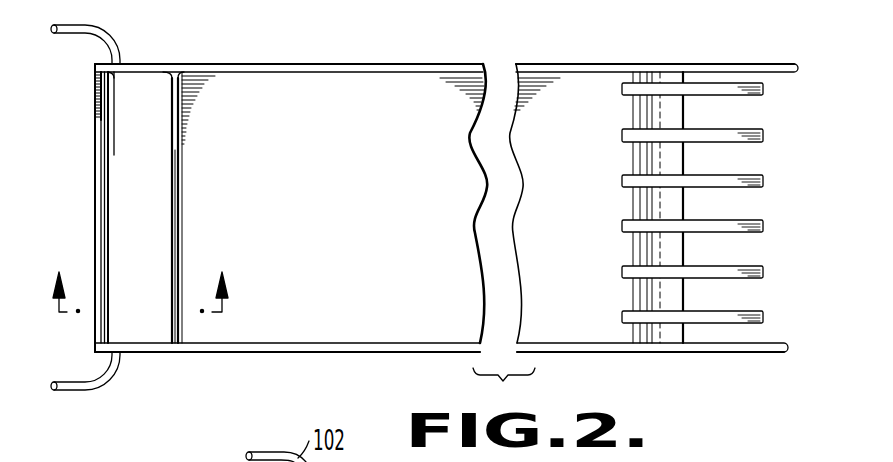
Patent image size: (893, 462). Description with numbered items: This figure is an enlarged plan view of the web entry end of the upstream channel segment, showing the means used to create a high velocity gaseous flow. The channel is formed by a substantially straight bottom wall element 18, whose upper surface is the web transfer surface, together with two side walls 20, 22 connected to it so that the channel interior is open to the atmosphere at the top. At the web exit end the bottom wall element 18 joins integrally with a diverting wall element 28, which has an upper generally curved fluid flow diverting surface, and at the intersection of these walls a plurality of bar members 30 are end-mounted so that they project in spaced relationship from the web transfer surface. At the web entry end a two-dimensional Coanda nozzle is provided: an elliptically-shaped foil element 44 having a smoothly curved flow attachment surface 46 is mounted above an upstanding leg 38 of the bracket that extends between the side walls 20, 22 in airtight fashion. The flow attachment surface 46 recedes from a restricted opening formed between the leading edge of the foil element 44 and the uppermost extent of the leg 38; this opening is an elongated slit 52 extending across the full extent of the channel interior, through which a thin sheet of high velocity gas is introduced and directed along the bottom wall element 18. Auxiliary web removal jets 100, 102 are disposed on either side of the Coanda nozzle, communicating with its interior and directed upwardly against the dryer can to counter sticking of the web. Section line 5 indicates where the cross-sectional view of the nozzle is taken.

The bottom wall element 18 is at (322, 213).
The side wall 20 is at (320, 353).
The side wall 22 is at (320, 63).
The diverting wall element 28 is at (673, 201).
The bar members 30 is at (764, 95).
The upstanding leg 38 is at (96, 212).
The foil element 44 is at (147, 162).
The flow attachment surface 46 is at (160, 245).
The elongated slit 52 is at (105, 102).
The auxiliary web removal jet 100 is at (81, 391).
The auxiliary web removal jet 102 is at (105, 31).
The section line 5- 5 is at (140, 292).